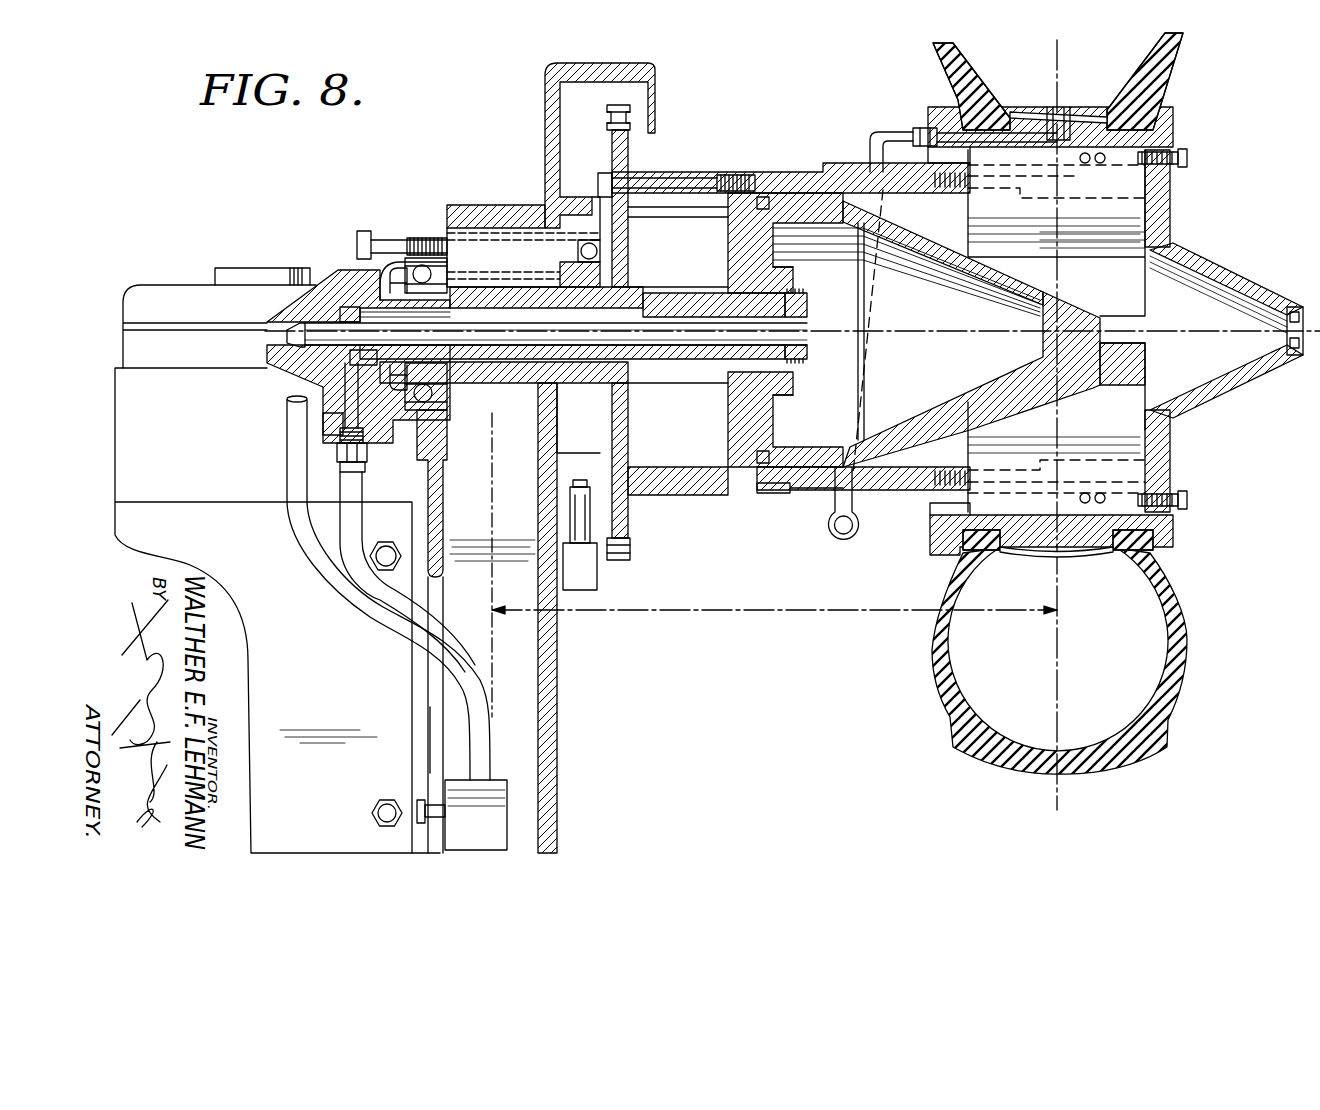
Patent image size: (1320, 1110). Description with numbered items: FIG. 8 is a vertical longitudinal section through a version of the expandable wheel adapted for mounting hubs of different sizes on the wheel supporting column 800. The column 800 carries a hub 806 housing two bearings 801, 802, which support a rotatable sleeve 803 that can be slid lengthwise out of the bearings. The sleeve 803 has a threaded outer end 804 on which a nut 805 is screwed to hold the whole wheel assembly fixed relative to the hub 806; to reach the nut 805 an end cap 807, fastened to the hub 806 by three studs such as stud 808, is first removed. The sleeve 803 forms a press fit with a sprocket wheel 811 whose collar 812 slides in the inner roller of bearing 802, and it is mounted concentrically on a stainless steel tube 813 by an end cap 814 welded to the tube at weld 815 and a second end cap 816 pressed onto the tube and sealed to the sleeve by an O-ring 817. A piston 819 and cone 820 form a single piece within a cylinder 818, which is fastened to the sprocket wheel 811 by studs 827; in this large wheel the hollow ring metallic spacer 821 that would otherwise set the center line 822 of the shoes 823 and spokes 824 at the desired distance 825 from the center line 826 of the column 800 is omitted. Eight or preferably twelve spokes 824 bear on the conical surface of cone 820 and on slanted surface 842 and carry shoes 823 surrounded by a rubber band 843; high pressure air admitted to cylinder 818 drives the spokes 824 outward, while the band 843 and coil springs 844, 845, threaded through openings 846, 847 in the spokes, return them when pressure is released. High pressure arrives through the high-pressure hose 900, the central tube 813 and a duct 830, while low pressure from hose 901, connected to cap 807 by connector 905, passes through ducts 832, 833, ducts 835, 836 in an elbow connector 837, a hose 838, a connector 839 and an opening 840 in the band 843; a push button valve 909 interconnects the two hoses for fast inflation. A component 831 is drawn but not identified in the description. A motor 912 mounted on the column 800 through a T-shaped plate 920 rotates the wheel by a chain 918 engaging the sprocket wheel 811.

The wheel supporting column 800 is at (552, 713).
The bearing 801 is at (447, 276).
The bearing 802 is at (558, 270).
The sleeve 803 is at (493, 388).
The threaded outer end 804 is at (380, 288).
The nut 805 is at (398, 272).
The hub 806 is at (492, 210).
The end cap 807 is at (303, 300).
The stud 808 is at (357, 244).
The sprocket wheel 811 is at (624, 154).
The collar 812 is at (560, 283).
The tube 813 is at (645, 303).
The end cap 814 is at (808, 300).
The weld 815 is at (808, 352).
The second end cap 816 is at (402, 312).
The O-ring 817 is at (400, 362).
The cylinder 818 is at (908, 468).
The piston 819 is at (772, 450).
The cone 820 is at (947, 400).
The hollow ring metallic spacer 821 is at (655, 497).
The center line 822 is at (1060, 655).
The shoe 823 is at (1168, 136).
The spoke 824 is at (1138, 307).
The distance 825 is at (766, 610).
The center line 826 is at (492, 655).
The stud 827 is at (612, 178).
The duct 830 is at (277, 352).
The rod 831 is at (345, 362).
The duct 832 is at (323, 420).
The duct 833 is at (710, 358).
The duct 835 is at (735, 432).
The duct 836 is at (750, 497).
The elbow connector 837 is at (838, 543).
The hose 838 is at (870, 150).
The connector 839 is at (925, 128).
The opening 840 is at (1062, 107).
The slanted surface 842 is at (1068, 308).
The rubber band 843 is at (1020, 82).
The coil spring 844 is at (1087, 163).
The coil spring 845 is at (1102, 163).
The opening 846 is at (1079, 158).
The opening 847 is at (1101, 158).
The high-pressure hose 900 is at (318, 577).
The low-pressure hose 901 is at (350, 530).
The connector 905 is at (337, 460).
The push button valve 909 is at (500, 812).
The motor 912 is at (182, 290).
The chain 918 is at (632, 112).
The T-shaped plate 920 is at (215, 508).